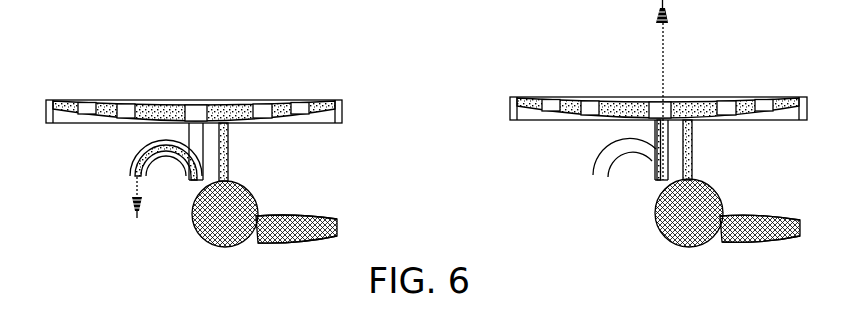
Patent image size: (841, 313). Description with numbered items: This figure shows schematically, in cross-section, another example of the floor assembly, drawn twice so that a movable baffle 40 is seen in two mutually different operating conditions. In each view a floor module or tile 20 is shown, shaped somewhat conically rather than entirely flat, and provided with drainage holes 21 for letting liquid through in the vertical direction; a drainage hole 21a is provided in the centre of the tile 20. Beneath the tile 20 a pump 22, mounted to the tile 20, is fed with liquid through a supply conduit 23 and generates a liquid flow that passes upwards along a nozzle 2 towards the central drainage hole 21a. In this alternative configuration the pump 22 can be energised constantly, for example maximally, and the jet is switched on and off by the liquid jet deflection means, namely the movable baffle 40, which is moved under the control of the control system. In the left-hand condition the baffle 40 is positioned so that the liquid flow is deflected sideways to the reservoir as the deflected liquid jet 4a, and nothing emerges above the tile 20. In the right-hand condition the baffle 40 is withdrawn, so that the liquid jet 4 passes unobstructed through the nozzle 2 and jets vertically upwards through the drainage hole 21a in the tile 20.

The nozzle 2 is at (197, 130).
The liquid jet 4 is at (661, 36).
The deflected liquid jet 4a is at (137, 188).
The floor module 20 is at (272, 85).
The drainage hole 21 is at (88, 107).
The central drainage hole 21a is at (197, 117).
The pump 22 is at (203, 217).
The supply conduit 23 is at (288, 225).
The movable baffle 40 is at (197, 157).